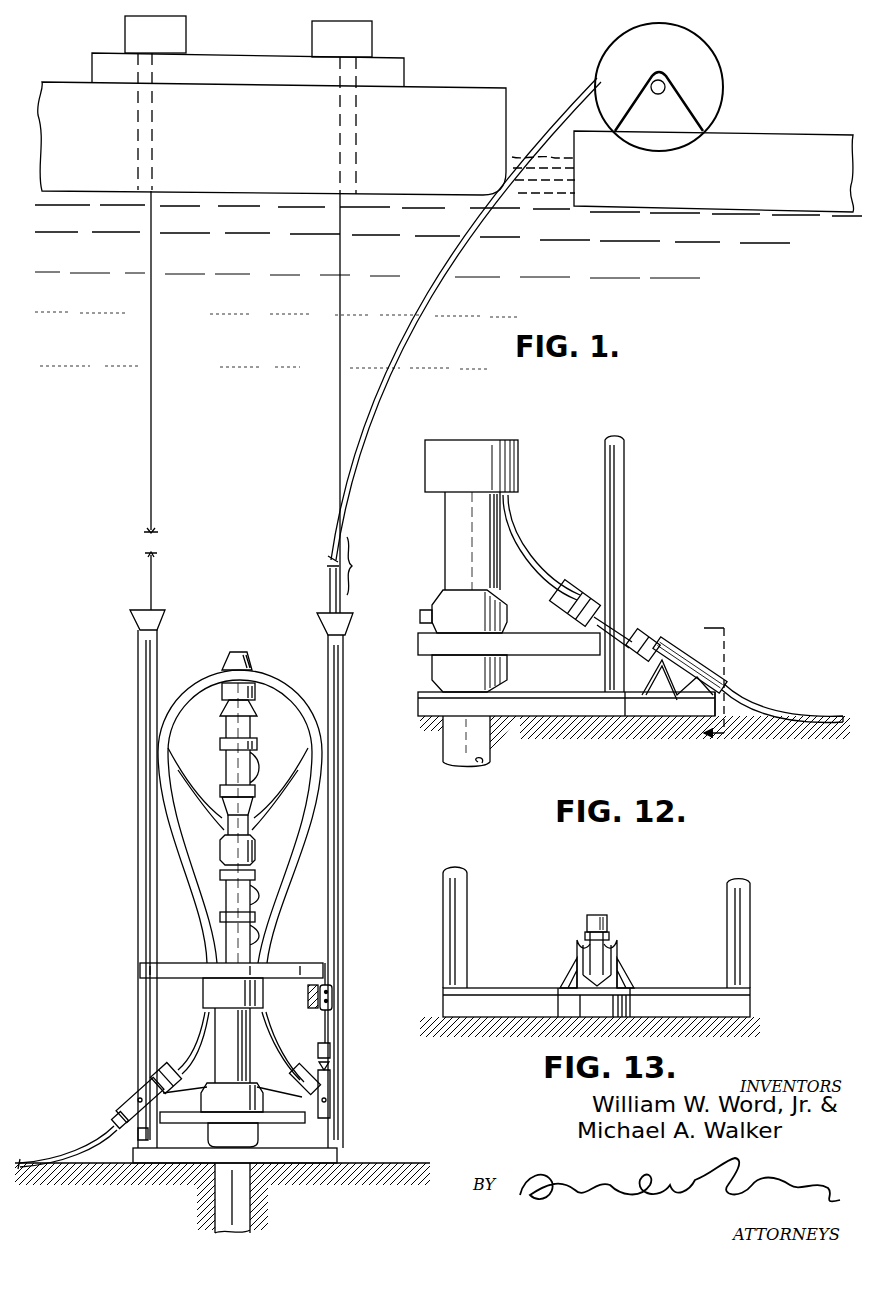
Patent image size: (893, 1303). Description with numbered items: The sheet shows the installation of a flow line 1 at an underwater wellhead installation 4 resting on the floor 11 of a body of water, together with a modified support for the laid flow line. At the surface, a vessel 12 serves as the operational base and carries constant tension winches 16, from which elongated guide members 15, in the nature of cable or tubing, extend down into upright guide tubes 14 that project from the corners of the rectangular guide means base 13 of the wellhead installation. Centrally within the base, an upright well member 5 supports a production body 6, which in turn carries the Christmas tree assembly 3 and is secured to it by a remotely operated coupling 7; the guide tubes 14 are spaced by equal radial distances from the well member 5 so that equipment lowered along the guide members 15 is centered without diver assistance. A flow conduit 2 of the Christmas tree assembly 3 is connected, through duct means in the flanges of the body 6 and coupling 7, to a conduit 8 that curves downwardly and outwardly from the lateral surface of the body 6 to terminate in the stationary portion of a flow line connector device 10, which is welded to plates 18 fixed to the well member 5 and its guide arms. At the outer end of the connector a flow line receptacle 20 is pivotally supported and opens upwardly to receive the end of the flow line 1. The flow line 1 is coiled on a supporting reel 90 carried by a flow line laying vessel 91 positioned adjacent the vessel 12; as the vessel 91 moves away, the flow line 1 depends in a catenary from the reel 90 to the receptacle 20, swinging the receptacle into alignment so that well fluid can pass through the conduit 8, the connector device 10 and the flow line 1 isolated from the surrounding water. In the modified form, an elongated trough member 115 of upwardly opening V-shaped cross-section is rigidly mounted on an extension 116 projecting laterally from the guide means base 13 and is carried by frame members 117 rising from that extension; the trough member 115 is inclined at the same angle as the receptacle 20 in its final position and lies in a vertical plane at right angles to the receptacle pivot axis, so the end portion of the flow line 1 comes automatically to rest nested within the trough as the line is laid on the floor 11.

In FIG. 1, the flow line 1 is at (410, 331).
In FIG. 12, the flow line 1 is at (790, 712).
In FIG. 13, the flow line 1 is at (592, 958).
In FIG. 1, the flow conduit 2 is at (275, 888).
In FIG. 1, the Christmas tree assembly 3 is at (238, 646).
In FIG. 1, the wellhead installation 4 is at (172, 1008).
In FIG. 1, the well member 5 is at (256, 1098).
In FIG. 12, the well member 5 is at (448, 615).
In FIG. 1, the production body 6 is at (225, 1042).
In FIG. 12, the production body 6 is at (460, 523).
In FIG. 1, the remotely operated coupling 7 is at (203, 990).
In FIG. 12, the remotely operated coupling 7 is at (495, 474).
In FIG. 1, the conduit 8 is at (276, 1054).
In FIG. 12, the conduit 8 is at (522, 536).
In FIG. 12, the flow line connector device 10 is at (590, 580).
In FIG. 1, the floor of the body of water 11 is at (396, 1163).
In FIG. 1, the vessel 12 is at (488, 88).
In FIG. 1, the guide means base 13 is at (293, 1168).
In FIG. 12, the guide means base 13 is at (530, 712).
In FIG. 13, the guide means base 13 is at (735, 1010).
In FIG. 1, the guide tubes 14 is at (138, 684).
In FIG. 12, the guide tubes 14 is at (626, 538).
In FIG. 13, the guide tubes 14 is at (740, 946).
In FIG. 1, the guide member 15 is at (148, 585).
In FIG. 1, the constant tension winch 16 is at (125, 26).
In FIG. 1, the plates 18 is at (196, 1108).
In FIG. 12, the flow line receptacle 20 is at (600, 618).
In FIG. 13, the flow line receptacle 20 is at (607, 926).
In FIG. 1, the supporting reel 90 is at (712, 75).
In FIG. 1, the flow line laying vessel 91 is at (785, 132).
In FIG. 12, the trough member 115 is at (683, 654).
In FIG. 13, the trough member 115 is at (617, 952).
In FIG. 12, the extension 116 is at (640, 710).
In FIG. 13, the extension 116 is at (632, 1000).
In FIG. 12, the frame members 117 is at (670, 697).
In FIG. 13, the frame members 117 is at (622, 980).